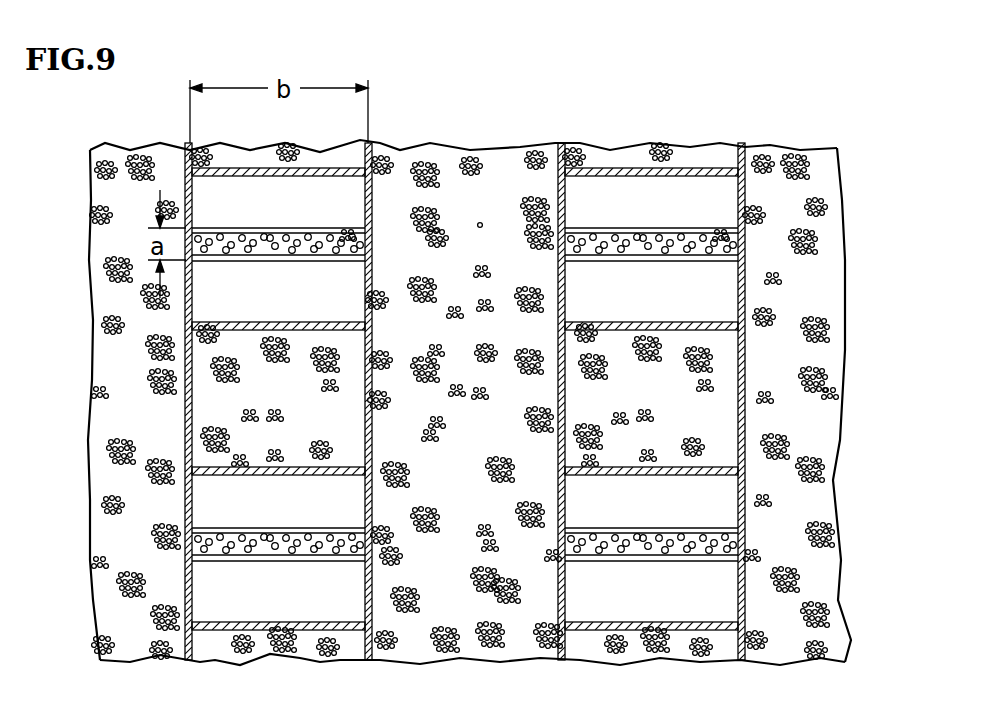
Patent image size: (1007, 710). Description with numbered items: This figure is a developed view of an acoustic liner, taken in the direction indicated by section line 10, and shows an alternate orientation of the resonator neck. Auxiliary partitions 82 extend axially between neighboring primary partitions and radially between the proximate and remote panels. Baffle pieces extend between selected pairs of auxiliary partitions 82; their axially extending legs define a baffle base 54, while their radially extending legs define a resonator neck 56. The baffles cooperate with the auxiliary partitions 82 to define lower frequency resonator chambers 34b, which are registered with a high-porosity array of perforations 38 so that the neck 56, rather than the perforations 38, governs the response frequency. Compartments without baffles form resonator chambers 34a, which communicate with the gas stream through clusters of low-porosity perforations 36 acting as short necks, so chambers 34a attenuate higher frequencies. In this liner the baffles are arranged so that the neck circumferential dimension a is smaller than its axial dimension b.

The section line for FIG. 10 is at (115, 267).
The resonator chamber 34a is at (172, 432).
The resonator chamber 34b is at (314, 298).
The perforations 36 is at (110, 402).
The perforations 38 is at (247, 240).
The baffle base 54 is at (330, 208).
The resonator neck 56 is at (298, 238).
The auxiliary partitions 82 is at (278, 168).